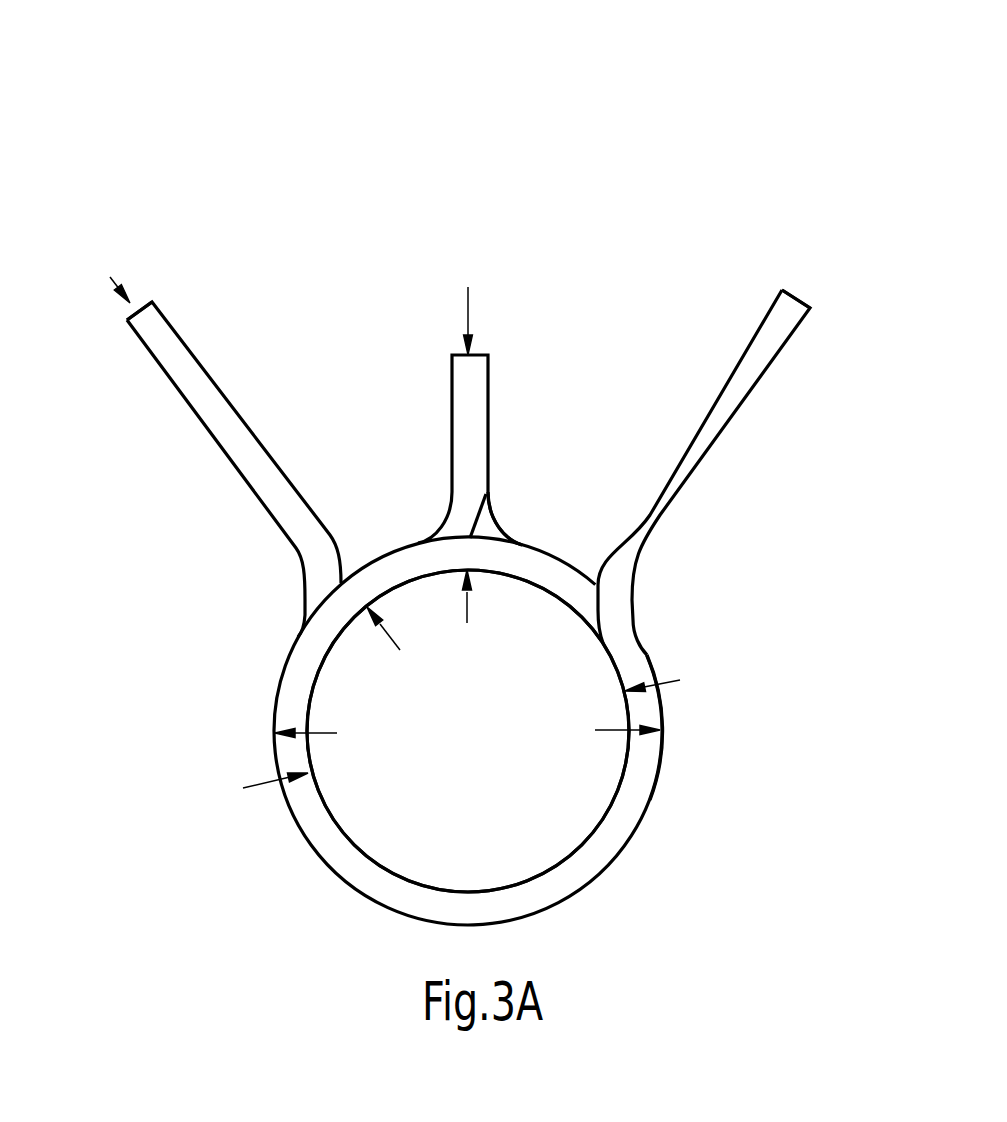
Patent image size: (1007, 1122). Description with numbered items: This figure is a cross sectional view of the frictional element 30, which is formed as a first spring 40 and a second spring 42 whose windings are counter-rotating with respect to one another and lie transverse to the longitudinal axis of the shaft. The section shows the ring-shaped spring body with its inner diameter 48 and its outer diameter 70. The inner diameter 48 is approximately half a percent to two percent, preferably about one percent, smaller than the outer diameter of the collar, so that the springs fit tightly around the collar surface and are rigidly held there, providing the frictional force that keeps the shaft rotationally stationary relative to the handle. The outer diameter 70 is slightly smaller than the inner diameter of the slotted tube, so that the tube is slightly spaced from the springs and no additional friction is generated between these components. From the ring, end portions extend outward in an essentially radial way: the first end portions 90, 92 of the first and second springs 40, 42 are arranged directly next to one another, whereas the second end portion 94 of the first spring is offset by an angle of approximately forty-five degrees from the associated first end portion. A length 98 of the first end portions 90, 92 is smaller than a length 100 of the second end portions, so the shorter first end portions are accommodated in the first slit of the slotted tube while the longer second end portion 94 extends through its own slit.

The frictional element 30 is at (220, 205).
The first spring 40 is at (622, 815).
The second spring 42 is at (507, 527).
The inner diameter 48 is at (678, 680).
The outer diameter 70 is at (615, 730).
The first end portion 90 is at (777, 320).
The first end portion 92 is at (163, 337).
The second end portion 94 is at (467, 380).
The length 98 is at (470, 307).
The length 100 is at (108, 274).